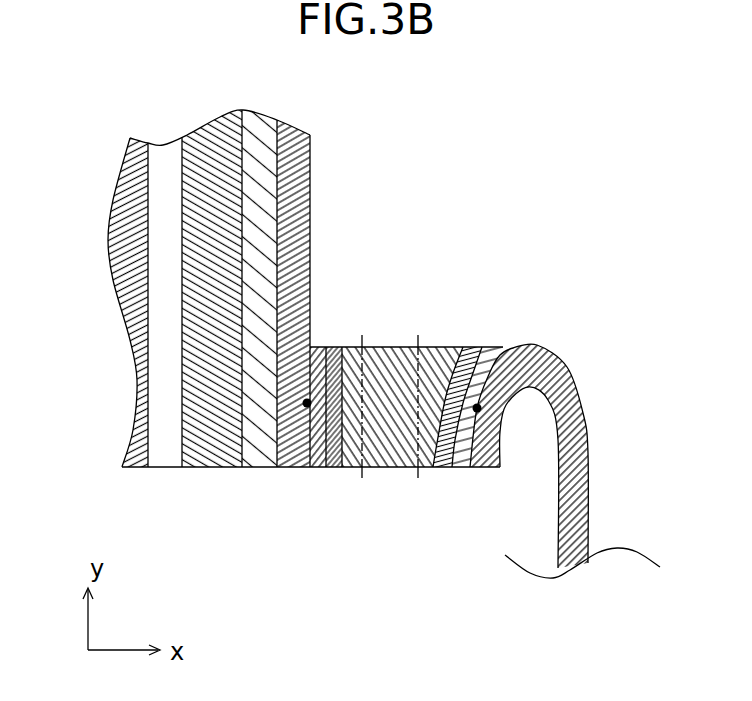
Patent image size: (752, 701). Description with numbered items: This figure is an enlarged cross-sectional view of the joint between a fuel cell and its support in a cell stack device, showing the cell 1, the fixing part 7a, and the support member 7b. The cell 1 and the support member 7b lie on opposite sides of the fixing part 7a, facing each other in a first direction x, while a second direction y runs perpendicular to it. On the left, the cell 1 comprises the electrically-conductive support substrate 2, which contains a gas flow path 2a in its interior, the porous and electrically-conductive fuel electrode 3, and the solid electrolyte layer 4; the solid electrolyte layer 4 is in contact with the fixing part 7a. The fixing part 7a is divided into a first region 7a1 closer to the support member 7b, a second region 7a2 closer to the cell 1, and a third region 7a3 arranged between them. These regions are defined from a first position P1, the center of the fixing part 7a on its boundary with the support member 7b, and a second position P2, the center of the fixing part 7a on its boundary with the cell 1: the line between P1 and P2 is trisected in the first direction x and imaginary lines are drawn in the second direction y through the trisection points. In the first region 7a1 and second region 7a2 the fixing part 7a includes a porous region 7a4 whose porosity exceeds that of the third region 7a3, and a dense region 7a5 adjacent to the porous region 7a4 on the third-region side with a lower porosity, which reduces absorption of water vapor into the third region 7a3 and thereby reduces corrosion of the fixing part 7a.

The cell 1 is at (97, 175).
The electrically-conductive support substrate 2 is at (202, 147).
The gas flow path 2a is at (165, 440).
The fuel electrode 3 is at (263, 133).
The solid electrolyte layer 4 is at (310, 212).
The fixing part 7a is at (308, 556).
The first region 7a1 is at (419, 485).
The second region 7a2 is at (307, 485).
The third region 7a3 is at (363, 485).
The porous region 7a4 is at (316, 347).
The dense region 7a5 is at (332, 347).
The support member 7b is at (557, 352).
The first position P1 is at (477, 408).
The second position P2 is at (307, 403).